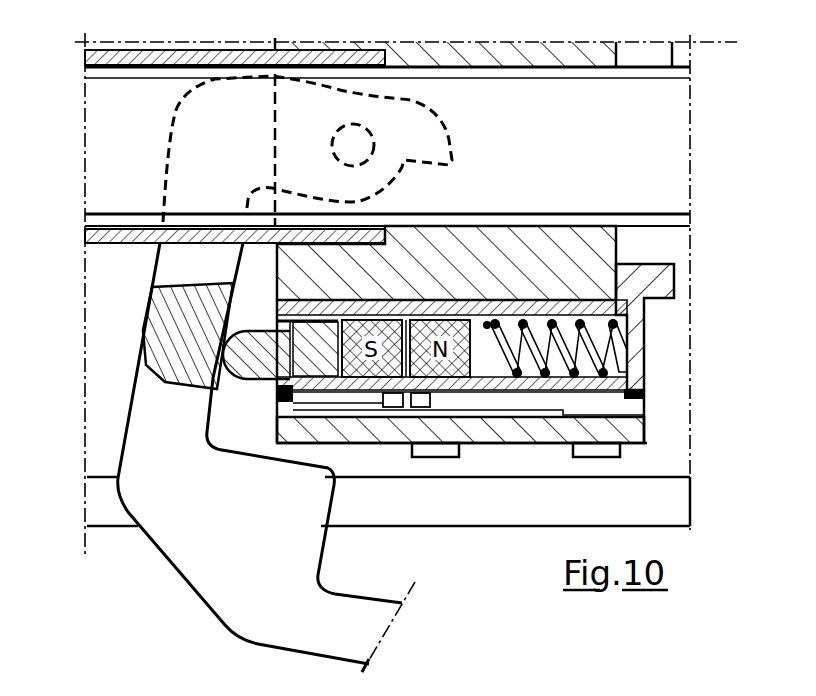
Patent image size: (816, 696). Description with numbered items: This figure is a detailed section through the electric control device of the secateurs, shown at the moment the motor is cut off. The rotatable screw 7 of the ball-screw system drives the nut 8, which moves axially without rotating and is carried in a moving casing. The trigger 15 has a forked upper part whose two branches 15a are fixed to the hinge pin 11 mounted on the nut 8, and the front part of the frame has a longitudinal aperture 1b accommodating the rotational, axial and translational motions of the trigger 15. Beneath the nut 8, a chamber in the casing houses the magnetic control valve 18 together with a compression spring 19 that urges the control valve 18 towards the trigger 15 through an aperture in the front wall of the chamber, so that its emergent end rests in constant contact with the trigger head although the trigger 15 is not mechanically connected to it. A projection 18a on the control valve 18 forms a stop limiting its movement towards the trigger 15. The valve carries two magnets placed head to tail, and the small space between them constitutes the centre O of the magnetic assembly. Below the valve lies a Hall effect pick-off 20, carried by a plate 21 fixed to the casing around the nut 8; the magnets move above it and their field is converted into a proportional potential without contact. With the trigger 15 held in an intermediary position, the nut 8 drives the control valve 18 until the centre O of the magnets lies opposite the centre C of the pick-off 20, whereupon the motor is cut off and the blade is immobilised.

The screw 7 is at (148, 93).
The hinge pin 11 is at (352, 145).
The nut 8 is at (369, 264).
The branches 15a is at (215, 288).
The projection 18a is at (320, 323).
The magnetic control valve 18 is at (243, 357).
The centre of the magnetic assembly O is at (278, 385).
The pick-off 20 is at (385, 397).
The centre of the pick-off C is at (277, 423).
The longitudinal aperture 1b is at (356, 513).
The trigger 15 is at (240, 572).
The compression spring 19 is at (596, 349).
The plate 21 is at (412, 432).